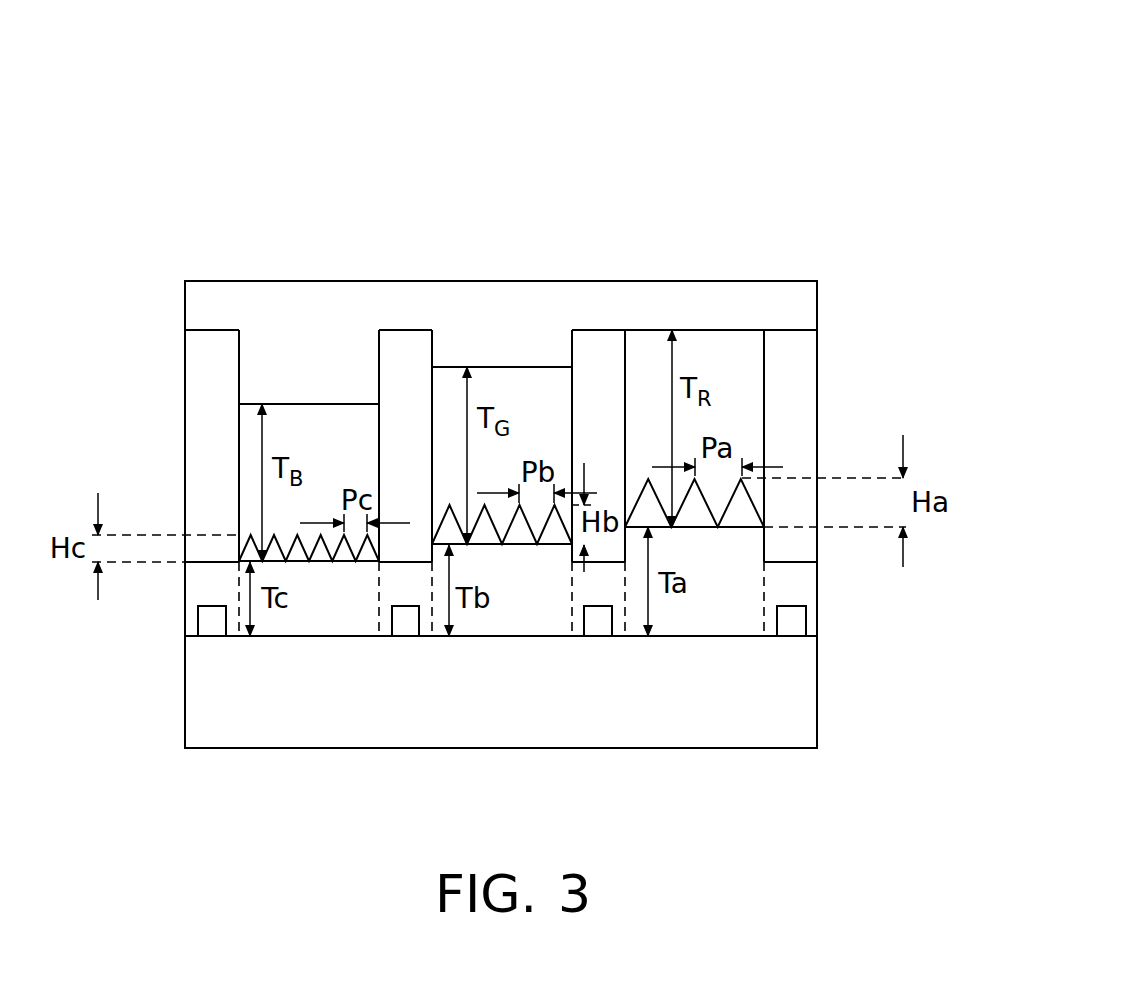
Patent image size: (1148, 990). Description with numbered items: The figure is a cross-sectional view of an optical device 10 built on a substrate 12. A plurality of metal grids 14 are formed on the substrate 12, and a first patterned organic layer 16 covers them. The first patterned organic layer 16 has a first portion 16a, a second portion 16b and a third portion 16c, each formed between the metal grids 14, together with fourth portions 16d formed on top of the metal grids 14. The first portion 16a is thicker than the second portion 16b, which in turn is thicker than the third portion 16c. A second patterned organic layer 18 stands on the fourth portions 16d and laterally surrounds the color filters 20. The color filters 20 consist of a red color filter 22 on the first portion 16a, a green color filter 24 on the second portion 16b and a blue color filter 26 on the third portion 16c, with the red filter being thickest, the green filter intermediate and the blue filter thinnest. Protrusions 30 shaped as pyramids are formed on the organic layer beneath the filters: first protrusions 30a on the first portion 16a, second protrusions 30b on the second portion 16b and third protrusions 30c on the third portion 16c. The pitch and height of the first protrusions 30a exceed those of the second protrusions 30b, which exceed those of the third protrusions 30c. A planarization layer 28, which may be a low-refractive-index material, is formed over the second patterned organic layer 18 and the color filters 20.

The optical device 10 is at (182, 163).
The substrate 12 is at (810, 692).
The metal grids 14 is at (207, 621).
The first patterned organic layer 16 is at (743, 3).
The first portion 16a is at (705, 618).
The second portion 16b is at (510, 618).
The third portion 16c is at (320, 618).
The fourth portions 16d is at (207, 582).
The second patterned organic layer 18 is at (402, 347).
The color filters 20 is at (598, 3).
The red color filter 22 is at (735, 345).
The green color filter 24 is at (540, 385).
The blue color filter 26 is at (350, 420).
The planarization layer 28 is at (805, 303).
The protrusions 30 is at (437, 3).
The first protrusions 30a is at (695, 517).
The second protrusions 30b is at (486, 537).
The third protrusions 30c is at (298, 552).